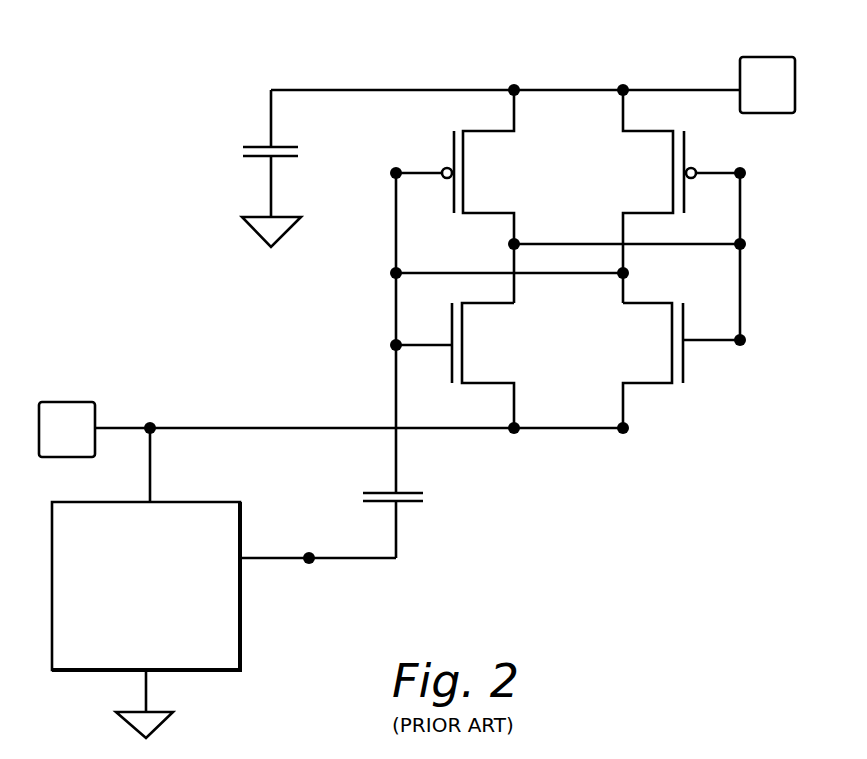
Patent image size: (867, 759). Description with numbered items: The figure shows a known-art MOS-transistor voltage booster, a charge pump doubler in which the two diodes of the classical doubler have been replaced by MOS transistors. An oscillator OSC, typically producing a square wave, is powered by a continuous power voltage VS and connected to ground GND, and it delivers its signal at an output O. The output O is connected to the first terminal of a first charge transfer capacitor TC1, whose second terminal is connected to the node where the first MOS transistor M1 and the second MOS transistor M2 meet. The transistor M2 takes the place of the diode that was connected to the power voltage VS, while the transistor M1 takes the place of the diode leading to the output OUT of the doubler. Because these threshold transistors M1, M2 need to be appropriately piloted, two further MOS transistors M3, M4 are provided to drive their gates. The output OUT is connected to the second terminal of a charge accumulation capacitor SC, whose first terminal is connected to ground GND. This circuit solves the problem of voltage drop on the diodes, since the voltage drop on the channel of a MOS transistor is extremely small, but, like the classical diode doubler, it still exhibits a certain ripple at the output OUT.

The charge accumulation capacitor SC is at (257, 153).
The ground GND is at (208, 477).
The output of the doubler OUT is at (767, 68).
The MOS transistor M3 is at (459, 167).
The MOS transistor M1 is at (678, 181).
The MOS transistor M4 is at (458, 365).
The MOS transistor M2 is at (677, 365).
The power voltage VS is at (67, 411).
The first charge transfer capacitor TC1 is at (421, 524).
The output of the oscillator O is at (318, 538).
The oscillator OSC is at (232, 607).